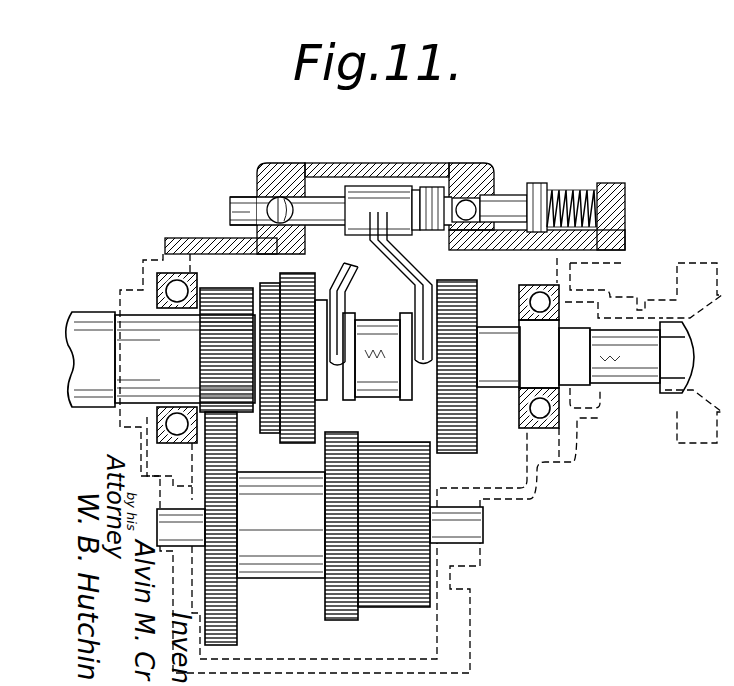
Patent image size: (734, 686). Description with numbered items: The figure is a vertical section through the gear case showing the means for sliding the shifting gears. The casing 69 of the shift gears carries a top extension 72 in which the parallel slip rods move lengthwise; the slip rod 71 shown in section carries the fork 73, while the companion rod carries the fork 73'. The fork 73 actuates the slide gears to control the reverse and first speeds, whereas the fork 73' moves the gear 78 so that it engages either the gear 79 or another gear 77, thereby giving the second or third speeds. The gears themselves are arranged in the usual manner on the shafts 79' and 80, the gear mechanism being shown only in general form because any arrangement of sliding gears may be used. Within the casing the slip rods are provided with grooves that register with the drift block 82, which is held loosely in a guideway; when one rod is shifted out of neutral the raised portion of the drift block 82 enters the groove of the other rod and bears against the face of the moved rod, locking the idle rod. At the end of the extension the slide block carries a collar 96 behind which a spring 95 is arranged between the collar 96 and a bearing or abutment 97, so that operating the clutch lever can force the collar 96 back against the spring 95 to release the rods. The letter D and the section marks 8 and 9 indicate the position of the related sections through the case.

The casing of the shift gears 69 is at (196, 232).
The slip rod 71 is at (322, 205).
The top extension of the gear casing 72 is at (448, 162).
The fork 73 is at (415, 288).
The fork 73' is at (356, 314).
The gear 77 is at (213, 299).
The gear 78 is at (292, 444).
The gear 79 is at (317, 528).
The shaft 79' is at (337, 548).
The shaft 80 is at (609, 372).
The drift block 82 is at (273, 203).
The spring 95 is at (574, 189).
The collar 96 is at (541, 184).
The bearing or abutment 97 is at (626, 184).
The plunger pin D is at (502, 179).
The section line 8- 8 is at (148, 168).
The section line 9- 9 is at (323, 258).